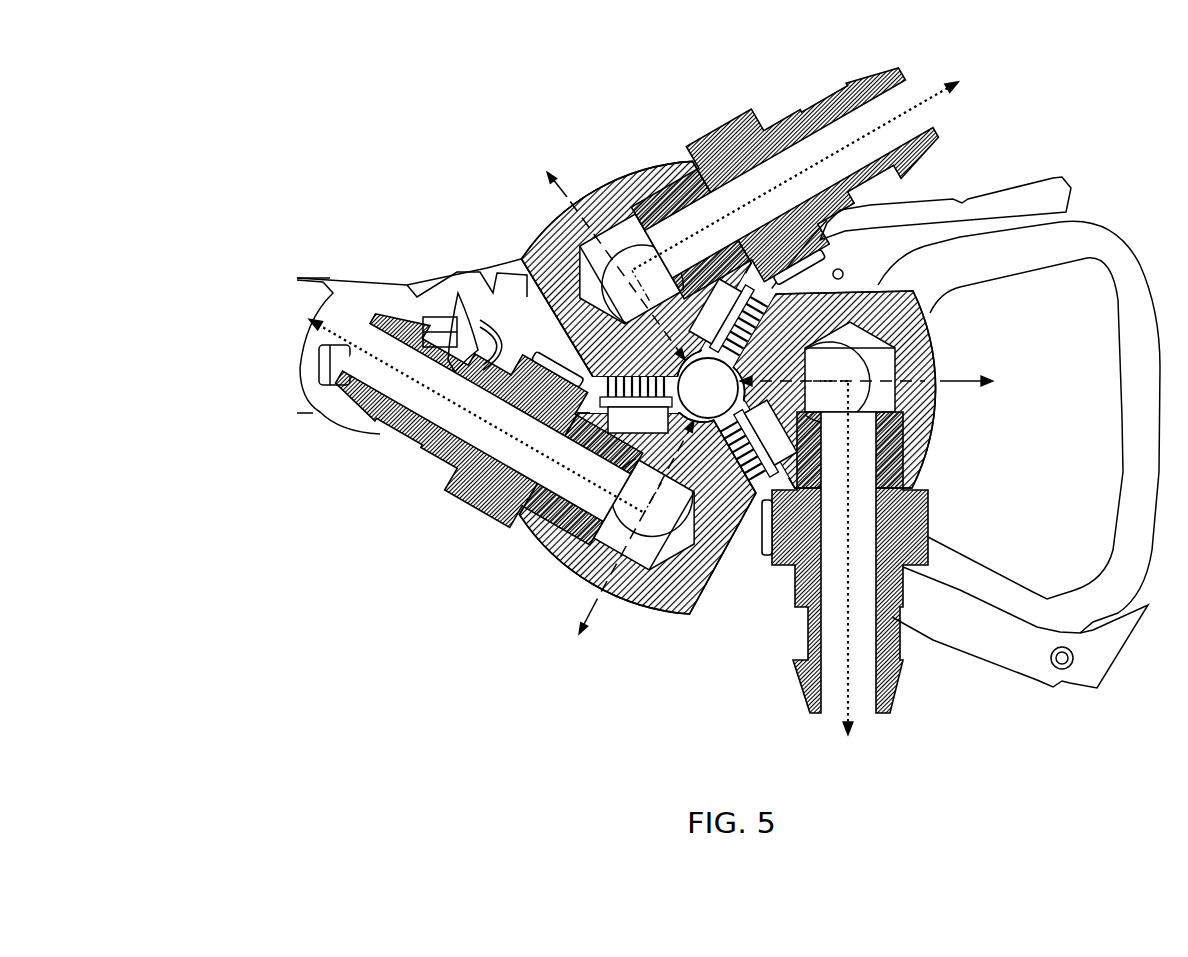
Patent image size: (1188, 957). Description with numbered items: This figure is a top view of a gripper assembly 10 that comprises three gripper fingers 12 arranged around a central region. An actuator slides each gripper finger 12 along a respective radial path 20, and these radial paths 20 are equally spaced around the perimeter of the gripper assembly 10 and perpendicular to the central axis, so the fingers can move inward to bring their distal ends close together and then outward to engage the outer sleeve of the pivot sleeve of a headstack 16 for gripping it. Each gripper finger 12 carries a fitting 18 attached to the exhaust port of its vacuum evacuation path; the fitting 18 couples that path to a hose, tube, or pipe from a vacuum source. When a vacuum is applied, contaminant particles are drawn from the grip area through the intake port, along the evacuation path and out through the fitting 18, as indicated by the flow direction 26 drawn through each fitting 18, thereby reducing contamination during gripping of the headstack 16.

The gripper assembly 10 is at (386, 63).
The gripper finger 12 is at (557, 241).
The headstack 16 is at (1047, 207).
The fitting 18 is at (696, 133).
The radial path 20 is at (567, 197).
The flow direction 26 is at (787, 743).